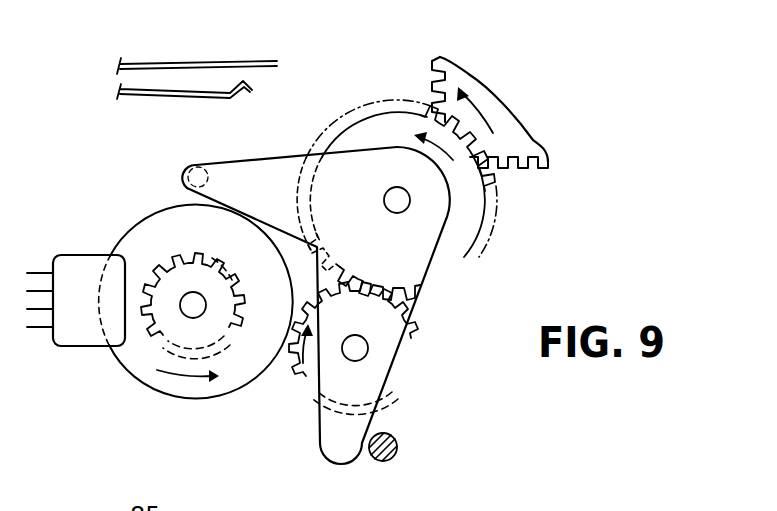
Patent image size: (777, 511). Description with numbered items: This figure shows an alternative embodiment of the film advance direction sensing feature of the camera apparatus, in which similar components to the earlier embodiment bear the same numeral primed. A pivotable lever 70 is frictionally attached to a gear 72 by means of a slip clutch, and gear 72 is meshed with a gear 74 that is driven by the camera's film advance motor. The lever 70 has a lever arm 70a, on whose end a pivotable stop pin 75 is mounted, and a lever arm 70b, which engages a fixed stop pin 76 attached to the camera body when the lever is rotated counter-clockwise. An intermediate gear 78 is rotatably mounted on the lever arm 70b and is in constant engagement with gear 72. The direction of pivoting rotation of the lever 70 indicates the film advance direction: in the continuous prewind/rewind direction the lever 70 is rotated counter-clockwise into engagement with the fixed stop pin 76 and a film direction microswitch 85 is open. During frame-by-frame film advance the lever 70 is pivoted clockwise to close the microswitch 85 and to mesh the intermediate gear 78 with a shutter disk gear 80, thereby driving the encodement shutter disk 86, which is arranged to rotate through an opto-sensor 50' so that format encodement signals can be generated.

The opto-sensor 50' is at (76, 263).
The pivotable lever 70 is at (413, 248).
The lever arm 70a is at (258, 178).
The lever arm 70b is at (376, 378).
The gear 72 is at (427, 125).
The gear 74 is at (434, 84).
The pivotable stop pin 75 is at (189, 166).
The fixed stop pin 76 is at (397, 440).
The intermediate gear 78 is at (300, 385).
The shutter disk gear 80 is at (232, 345).
The film direction microswitch 85 is at (153, 65).
The encodement shutter disk 86 is at (145, 358).